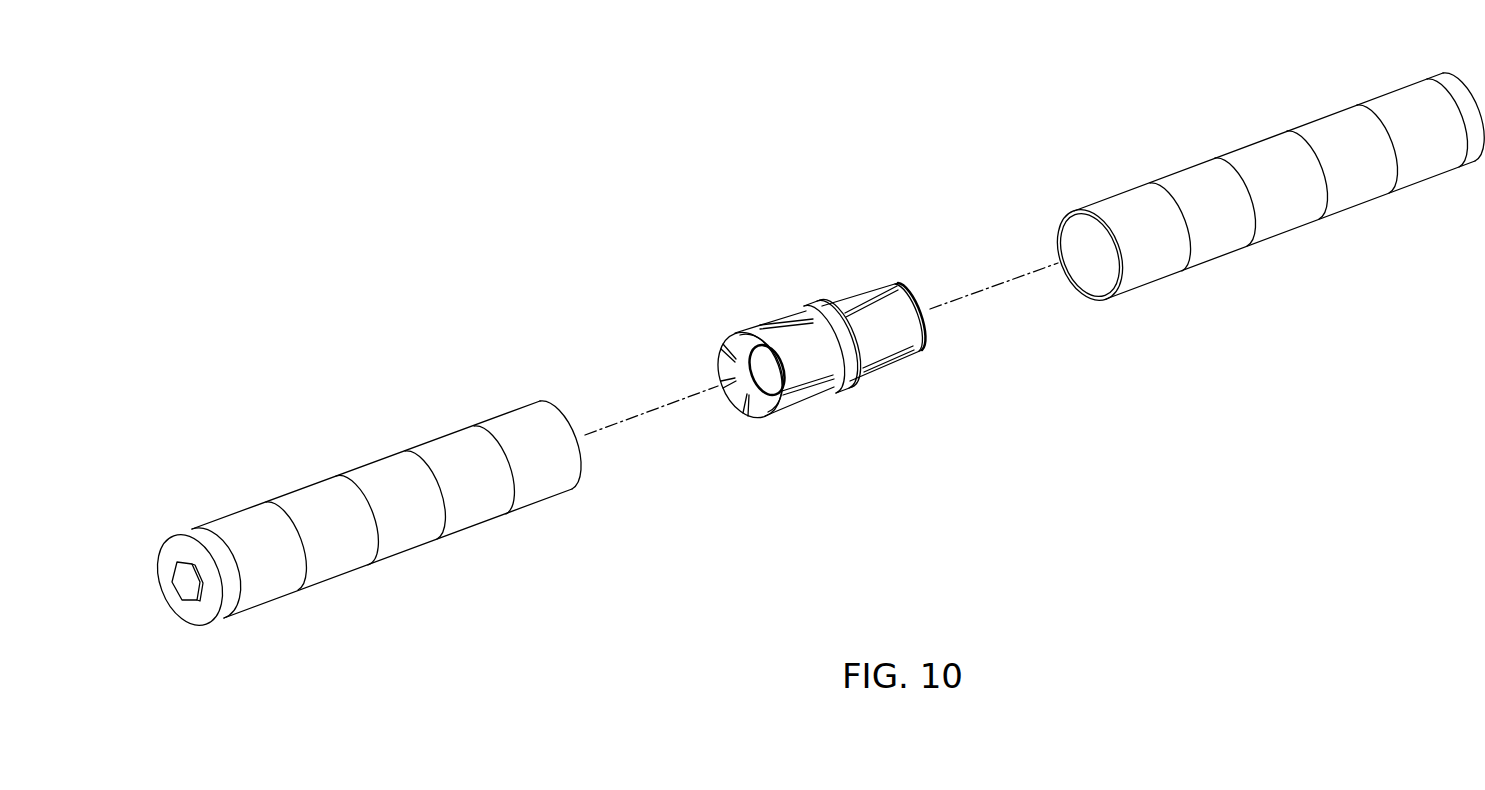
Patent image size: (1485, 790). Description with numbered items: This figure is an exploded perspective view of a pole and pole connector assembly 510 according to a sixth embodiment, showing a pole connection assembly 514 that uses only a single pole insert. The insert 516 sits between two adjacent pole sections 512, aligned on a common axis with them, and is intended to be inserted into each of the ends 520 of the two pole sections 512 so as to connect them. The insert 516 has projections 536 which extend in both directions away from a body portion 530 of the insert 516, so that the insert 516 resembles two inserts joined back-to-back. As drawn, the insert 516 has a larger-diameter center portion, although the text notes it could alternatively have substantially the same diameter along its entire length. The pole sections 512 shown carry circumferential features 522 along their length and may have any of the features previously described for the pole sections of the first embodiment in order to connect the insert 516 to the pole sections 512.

The pole assembly 510 is at (632, 157).
The pole section 512 is at (390, 530).
The pole connection assembly 514 is at (829, 352).
The insert 516 is at (817, 273).
The end 520 is at (563, 475).
The grip rings 522 is at (1297, 132).
The body portion 530 is at (867, 352).
The projections 536 is at (817, 353).